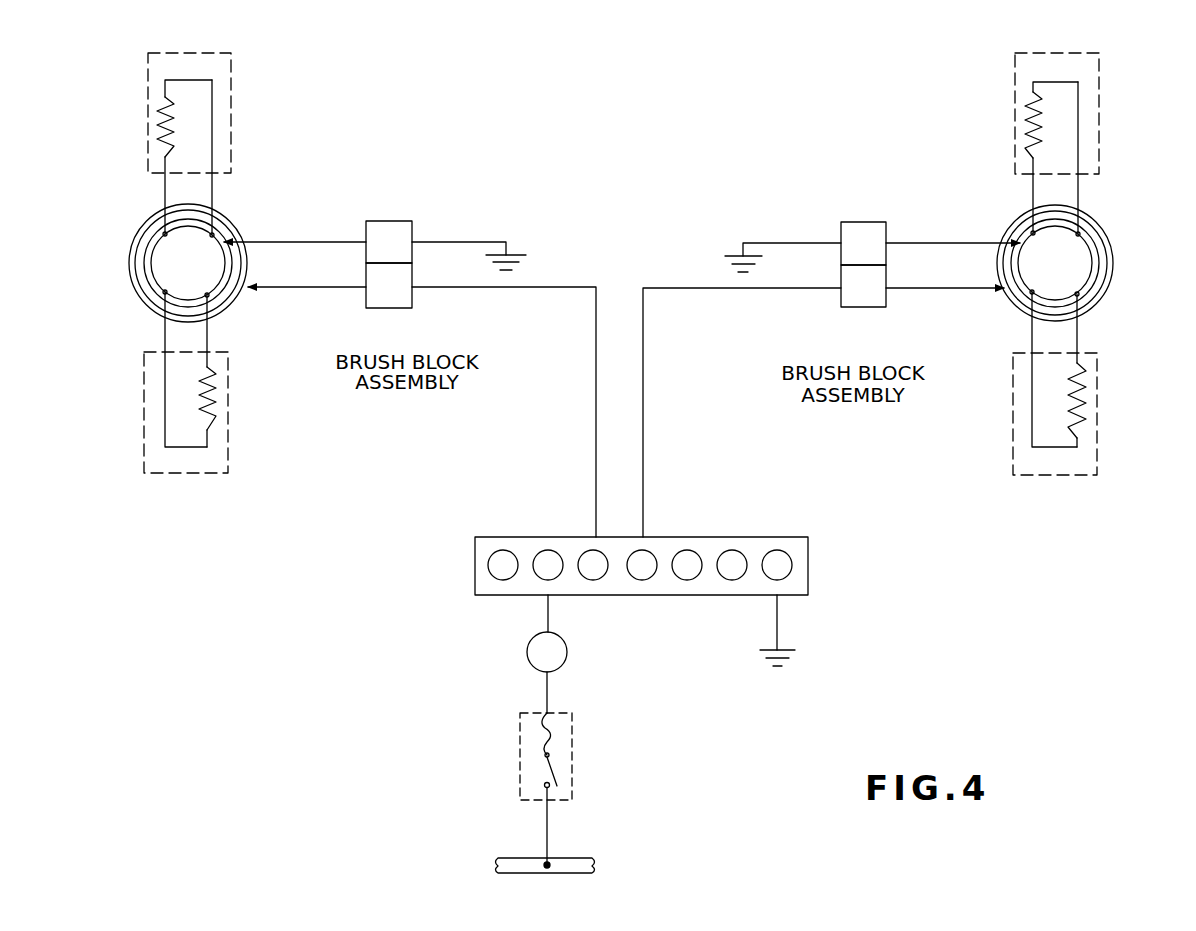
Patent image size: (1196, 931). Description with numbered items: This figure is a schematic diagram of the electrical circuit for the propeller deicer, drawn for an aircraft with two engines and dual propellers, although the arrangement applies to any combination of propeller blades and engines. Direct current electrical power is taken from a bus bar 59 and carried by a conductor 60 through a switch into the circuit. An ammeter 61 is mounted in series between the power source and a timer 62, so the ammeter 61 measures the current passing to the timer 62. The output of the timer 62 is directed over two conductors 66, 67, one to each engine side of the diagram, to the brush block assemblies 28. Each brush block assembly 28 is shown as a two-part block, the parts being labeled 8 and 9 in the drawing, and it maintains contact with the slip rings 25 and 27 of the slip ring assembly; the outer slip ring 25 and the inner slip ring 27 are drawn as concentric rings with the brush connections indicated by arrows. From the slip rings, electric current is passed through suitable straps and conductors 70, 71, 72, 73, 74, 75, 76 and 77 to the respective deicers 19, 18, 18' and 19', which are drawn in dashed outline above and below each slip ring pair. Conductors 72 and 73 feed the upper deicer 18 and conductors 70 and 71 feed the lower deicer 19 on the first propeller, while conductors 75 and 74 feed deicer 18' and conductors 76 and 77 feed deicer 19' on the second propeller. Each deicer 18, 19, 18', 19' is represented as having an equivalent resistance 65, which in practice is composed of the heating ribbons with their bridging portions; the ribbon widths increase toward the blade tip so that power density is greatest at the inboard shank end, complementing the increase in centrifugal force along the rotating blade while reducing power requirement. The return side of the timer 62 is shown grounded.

The brush block 8 is at (383, 230).
The brush block 9 is at (398, 308).
The deicer 18 is at (229, 113).
The deicer 18' is at (1097, 113).
The deicer 19 is at (228, 413).
The deicer 19' is at (1100, 414).
The slip ring 25 is at (133, 280).
The slip ring 27 is at (160, 242).
The brush block assembly 28 is at (372, 316).
The bus bar 59 is at (520, 862).
The conductor 60 is at (547, 832).
The ammeter 61 is at (568, 652).
The timer 62 is at (725, 537).
The equivalent resistance 65 is at (160, 113).
The conductor 66 is at (596, 430).
The conductor 67 is at (643, 415).
The conductor 70 is at (165, 335).
The conductor 71 is at (210, 335).
The conductor 72 is at (165, 193).
The conductor 73 is at (212, 193).
The conductor 74 is at (1078, 195).
The conductor 75 is at (1033, 191).
The conductor 76 is at (1032, 335).
The conductor 77 is at (1078, 337).